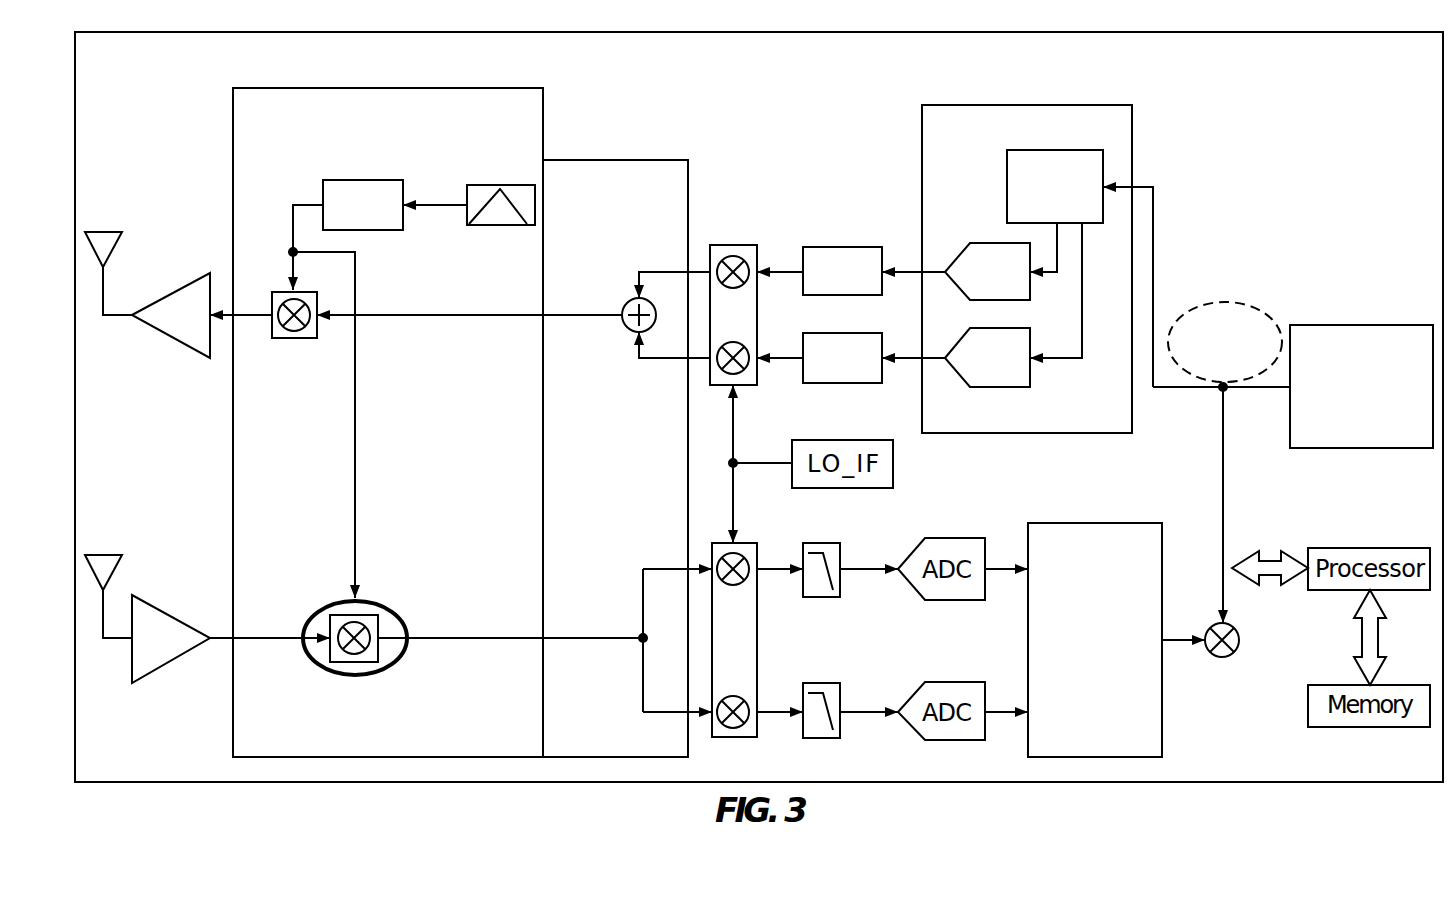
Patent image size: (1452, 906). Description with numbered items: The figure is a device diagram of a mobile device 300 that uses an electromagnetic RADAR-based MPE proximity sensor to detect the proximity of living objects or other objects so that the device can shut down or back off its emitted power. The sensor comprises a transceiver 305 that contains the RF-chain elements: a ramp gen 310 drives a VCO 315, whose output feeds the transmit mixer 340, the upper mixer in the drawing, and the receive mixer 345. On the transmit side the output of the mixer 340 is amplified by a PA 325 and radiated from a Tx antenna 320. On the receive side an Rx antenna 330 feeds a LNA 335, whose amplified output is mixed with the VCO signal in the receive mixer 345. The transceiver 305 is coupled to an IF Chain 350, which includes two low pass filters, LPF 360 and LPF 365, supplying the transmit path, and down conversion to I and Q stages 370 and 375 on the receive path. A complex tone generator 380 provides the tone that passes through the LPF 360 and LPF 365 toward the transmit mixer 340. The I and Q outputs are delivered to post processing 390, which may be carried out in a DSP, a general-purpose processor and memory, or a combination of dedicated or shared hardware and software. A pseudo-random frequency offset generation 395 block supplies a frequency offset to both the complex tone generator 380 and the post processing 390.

The mobile device 300 is at (242, 32).
The transceiver 305 is at (473, 86).
The ramp gen 310 is at (500, 227).
The VCO 315 is at (362, 180).
The Tx antenna 320 is at (105, 230).
The PA 325 is at (190, 287).
The Rx antenna 330 is at (105, 553).
The LNA 335 is at (157, 605).
The transmit mixer 340 is at (302, 340).
The receive mixer 345 is at (355, 676).
The IF Chain 350 is at (633, 158).
The LPF 360 is at (843, 245).
The LPF 365 is at (842, 383).
The down conversion to I 370 is at (825, 543).
The down conversion to Q 375 is at (825, 683).
The complex tone generator 380 is at (1057, 150).
The post processing 390 is at (1093, 523).
The pseudo-random frequency offset generation 395 is at (1367, 325).